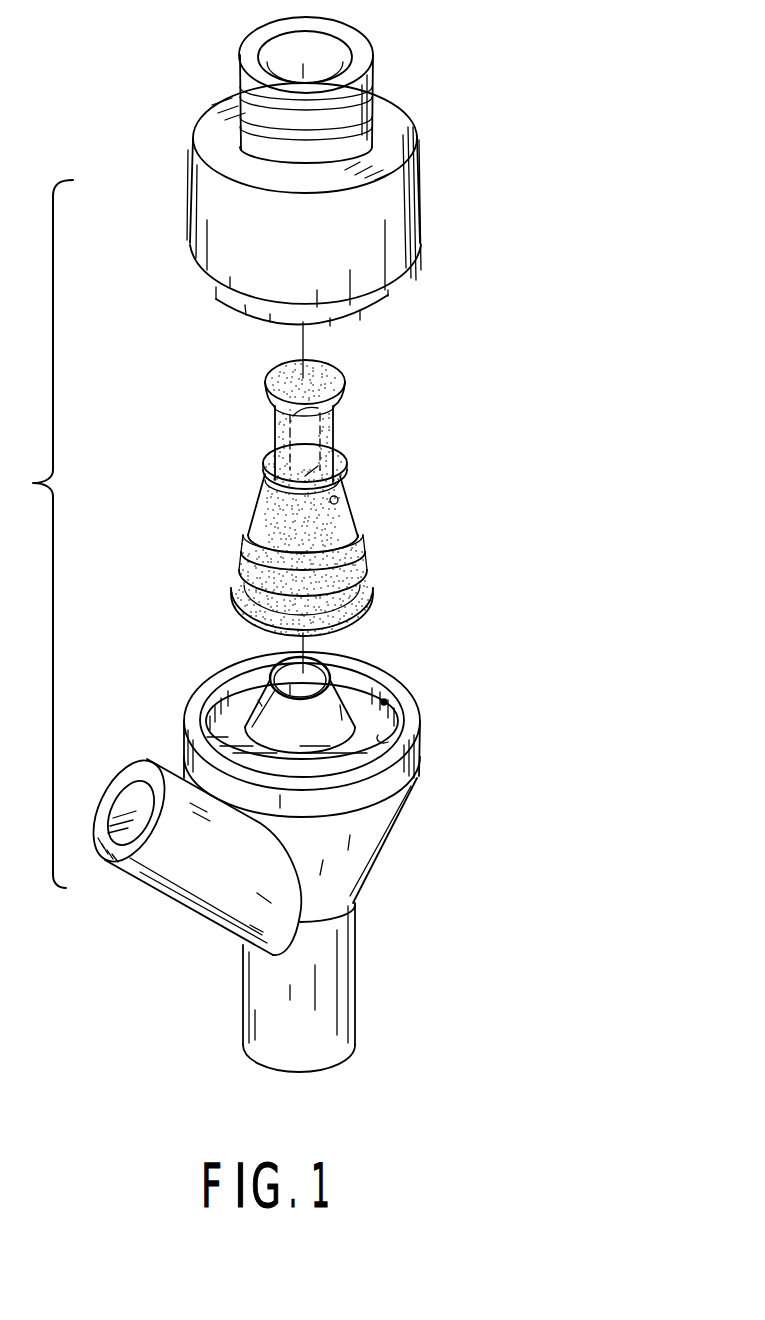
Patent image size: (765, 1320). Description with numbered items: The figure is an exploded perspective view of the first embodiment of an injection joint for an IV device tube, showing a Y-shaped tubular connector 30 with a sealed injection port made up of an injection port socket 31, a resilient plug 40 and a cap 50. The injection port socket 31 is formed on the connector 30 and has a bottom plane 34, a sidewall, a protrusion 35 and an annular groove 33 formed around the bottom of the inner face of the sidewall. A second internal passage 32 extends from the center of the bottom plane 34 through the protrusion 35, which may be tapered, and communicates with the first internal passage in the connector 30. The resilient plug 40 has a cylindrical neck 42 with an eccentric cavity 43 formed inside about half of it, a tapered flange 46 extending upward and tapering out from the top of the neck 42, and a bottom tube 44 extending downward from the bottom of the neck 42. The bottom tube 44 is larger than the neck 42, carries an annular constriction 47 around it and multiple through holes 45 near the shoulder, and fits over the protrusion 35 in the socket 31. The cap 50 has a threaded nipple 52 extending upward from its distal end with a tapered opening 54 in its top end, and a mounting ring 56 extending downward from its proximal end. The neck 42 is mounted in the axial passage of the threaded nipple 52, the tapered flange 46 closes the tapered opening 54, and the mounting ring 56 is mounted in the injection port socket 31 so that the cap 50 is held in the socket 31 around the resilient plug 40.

The connector 30 is at (394, 826).
The injection port socket 31 is at (387, 698).
The second internal passage 32 is at (332, 672).
The annular groove 33 is at (192, 730).
The bottom plane 34 is at (379, 736).
The protrusion 35 is at (252, 703).
The resilient plug 40 is at (506, 432).
The neck 42 is at (335, 419).
The eccentric cavity 43 is at (345, 461).
The bottom tube 44 is at (357, 517).
The through holes 45 is at (338, 498).
The tapered flange 46 is at (345, 395).
The annular constriction 47 is at (365, 564).
The cap 50 is at (418, 176).
The threaded nipple 52 is at (373, 78).
The tapered opening 54 is at (343, 43).
The mounting ring 56 is at (390, 301).